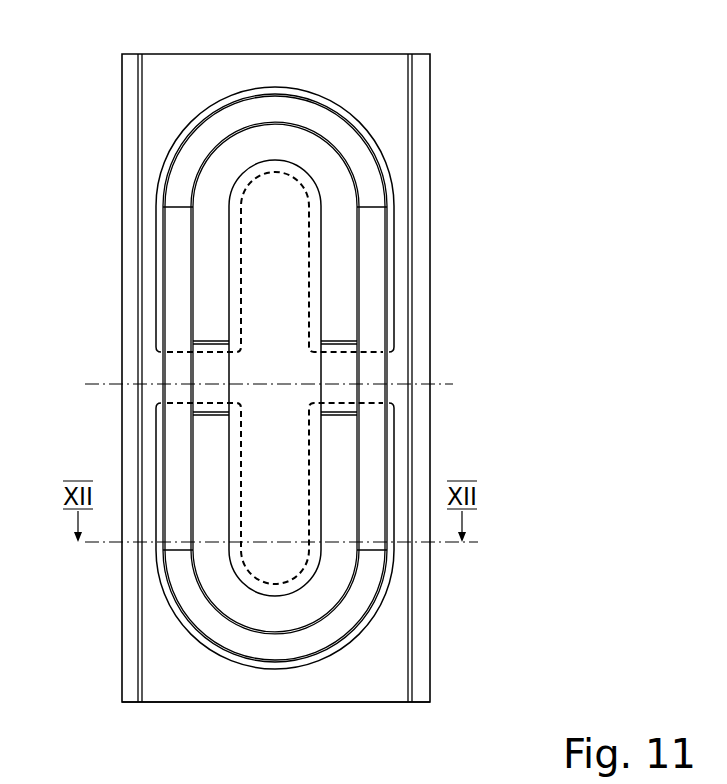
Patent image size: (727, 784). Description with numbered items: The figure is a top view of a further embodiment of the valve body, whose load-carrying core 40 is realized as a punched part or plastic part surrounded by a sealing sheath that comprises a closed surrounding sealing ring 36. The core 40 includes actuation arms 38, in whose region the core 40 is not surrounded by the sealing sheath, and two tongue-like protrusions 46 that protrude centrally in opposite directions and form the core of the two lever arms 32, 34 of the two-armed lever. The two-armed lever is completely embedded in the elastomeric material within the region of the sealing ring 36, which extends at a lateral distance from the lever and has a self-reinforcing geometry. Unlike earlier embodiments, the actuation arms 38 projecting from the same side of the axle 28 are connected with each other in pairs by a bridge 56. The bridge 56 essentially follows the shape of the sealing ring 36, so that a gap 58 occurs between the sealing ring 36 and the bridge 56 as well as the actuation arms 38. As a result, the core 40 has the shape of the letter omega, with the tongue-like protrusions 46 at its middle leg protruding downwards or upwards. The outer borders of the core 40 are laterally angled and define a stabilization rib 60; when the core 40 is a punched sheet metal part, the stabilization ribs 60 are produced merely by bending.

The axle 28 is at (448, 383).
The arm 32 is at (283, 577).
The arm 34 is at (320, 230).
The sealing ring 36 is at (370, 590).
The actuation arms 38 is at (393, 103).
The core 40 is at (392, 77).
The tongue-like protrusions 46 is at (280, 190).
The bridge 56 is at (317, 68).
The gap 58 is at (158, 207).
The stabilization rib 60 is at (132, 680).